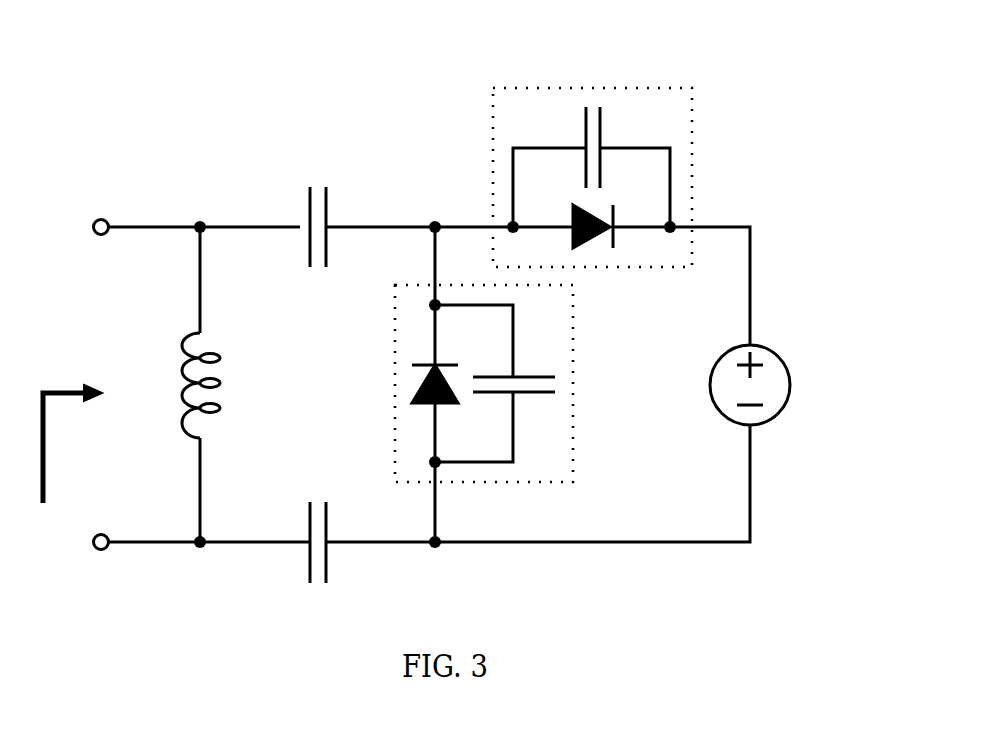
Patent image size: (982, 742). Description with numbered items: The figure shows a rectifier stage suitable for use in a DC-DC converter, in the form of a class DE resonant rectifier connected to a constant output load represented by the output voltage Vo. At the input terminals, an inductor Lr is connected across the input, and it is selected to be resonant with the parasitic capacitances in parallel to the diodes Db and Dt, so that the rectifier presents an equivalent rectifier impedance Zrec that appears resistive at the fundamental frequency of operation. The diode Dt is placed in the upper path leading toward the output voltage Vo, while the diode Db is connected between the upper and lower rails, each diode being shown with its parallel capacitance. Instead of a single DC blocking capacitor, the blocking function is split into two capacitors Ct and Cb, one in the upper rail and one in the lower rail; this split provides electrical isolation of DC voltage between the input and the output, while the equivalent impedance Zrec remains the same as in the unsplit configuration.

The capacitor Ct is at (317, 261).
The capacitor Cb is at (320, 516).
The inductor Lr is at (226, 385).
The diode Db is at (484, 383).
The diode Dt is at (592, 177).
The output voltage Vo is at (781, 385).
The equivalent rectifier impedance Zrec is at (84, 447).